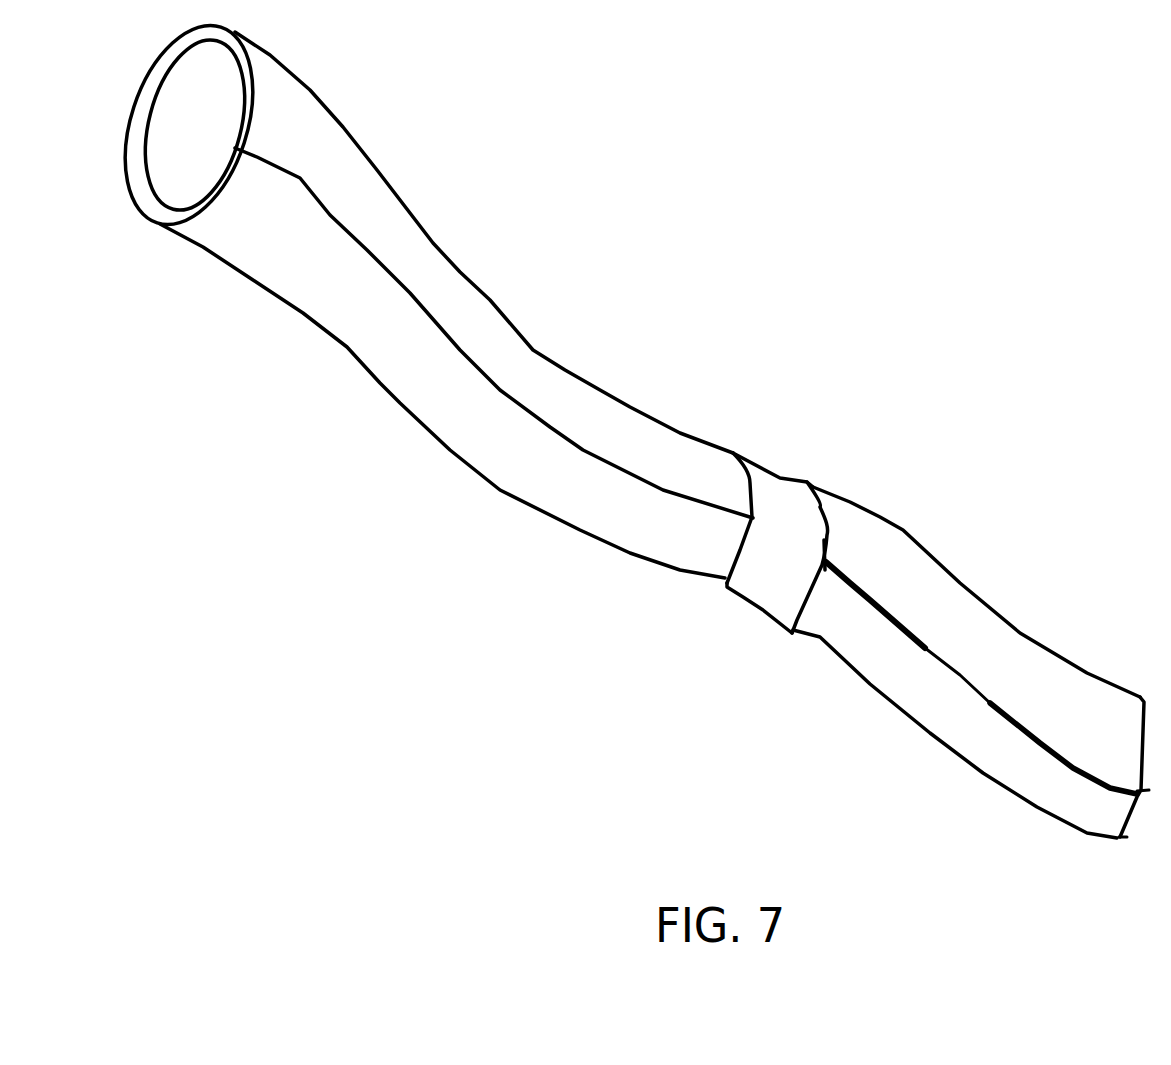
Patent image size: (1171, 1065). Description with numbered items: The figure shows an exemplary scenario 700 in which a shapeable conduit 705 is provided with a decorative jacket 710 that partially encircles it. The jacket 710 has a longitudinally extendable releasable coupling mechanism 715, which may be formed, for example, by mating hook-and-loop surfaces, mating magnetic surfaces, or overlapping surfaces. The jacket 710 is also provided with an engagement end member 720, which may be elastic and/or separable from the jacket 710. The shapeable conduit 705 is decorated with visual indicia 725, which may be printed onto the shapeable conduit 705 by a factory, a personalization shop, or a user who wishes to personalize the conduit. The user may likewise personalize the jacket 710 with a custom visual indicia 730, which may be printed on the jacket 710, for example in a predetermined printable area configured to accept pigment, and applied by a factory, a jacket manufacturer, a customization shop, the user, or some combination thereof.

The depicted scenario 700 is at (990, 168).
The shapeable conduit 705 is at (317, 110).
The jacket 710 is at (887, 517).
The longitudinally extendable releasable coupling mechanism 715 is at (863, 600).
The engagement end member 720 is at (782, 477).
The visual indicia 725 is at (388, 200).
The custom visual indicia 730 is at (1020, 657).